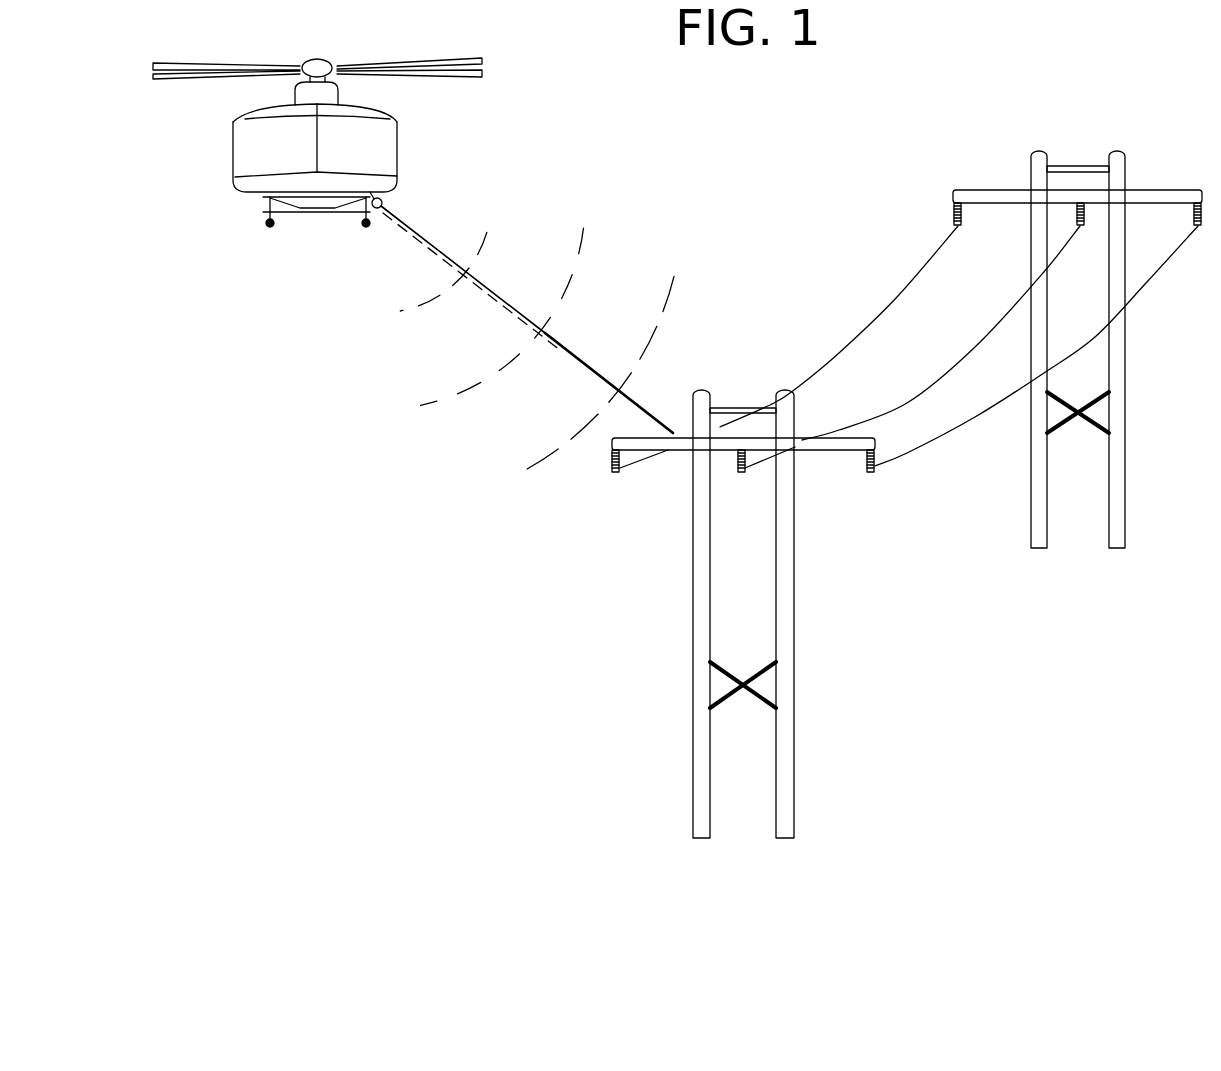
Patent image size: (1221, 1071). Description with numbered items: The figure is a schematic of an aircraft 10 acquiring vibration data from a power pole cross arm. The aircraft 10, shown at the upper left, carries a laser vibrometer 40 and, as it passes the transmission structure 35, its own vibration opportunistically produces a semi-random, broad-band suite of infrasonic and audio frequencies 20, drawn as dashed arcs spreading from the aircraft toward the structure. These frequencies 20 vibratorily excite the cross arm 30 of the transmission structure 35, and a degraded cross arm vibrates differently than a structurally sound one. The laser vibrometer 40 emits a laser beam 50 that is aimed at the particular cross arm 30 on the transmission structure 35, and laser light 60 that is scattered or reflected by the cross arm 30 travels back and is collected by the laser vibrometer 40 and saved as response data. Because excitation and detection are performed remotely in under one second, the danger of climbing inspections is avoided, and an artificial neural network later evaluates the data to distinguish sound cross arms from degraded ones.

The aircraft 10 is at (235, 152).
The infrasonic and audio frequencies 20 is at (575, 283).
The cross arm 30 is at (665, 456).
The transmission structure 35 is at (690, 664).
The laser vibrometer 40 is at (383, 199).
The laser beam 50 is at (440, 247).
The laser light 60 is at (437, 250).